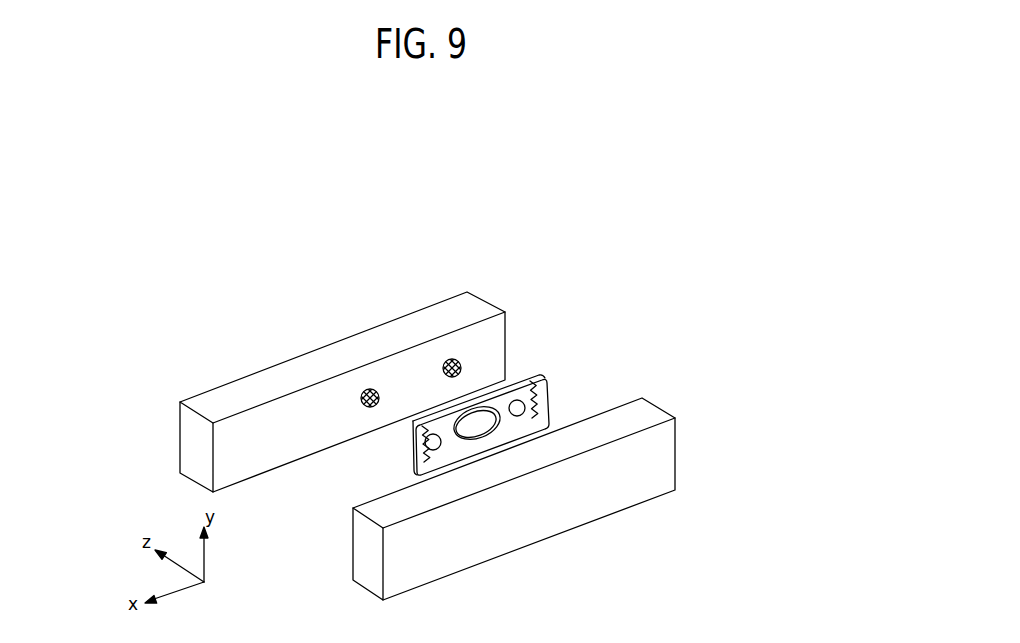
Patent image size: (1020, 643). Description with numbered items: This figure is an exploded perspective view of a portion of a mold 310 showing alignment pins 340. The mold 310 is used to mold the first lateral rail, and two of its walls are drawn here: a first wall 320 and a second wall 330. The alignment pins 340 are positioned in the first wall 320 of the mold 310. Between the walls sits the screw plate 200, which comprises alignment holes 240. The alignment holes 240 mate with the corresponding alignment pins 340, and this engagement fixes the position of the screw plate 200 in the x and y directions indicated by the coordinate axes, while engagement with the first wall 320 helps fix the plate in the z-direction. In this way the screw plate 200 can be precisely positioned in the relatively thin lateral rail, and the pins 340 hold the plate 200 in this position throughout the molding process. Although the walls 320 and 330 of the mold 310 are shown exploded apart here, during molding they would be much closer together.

The mold 310 is at (417, 246).
The first wall 320 is at (328, 363).
The wall 330 is at (362, 566).
The alignment pins 340 is at (460, 360).
The screw plate 200 is at (592, 407).
The alignment holes 240 is at (521, 415).